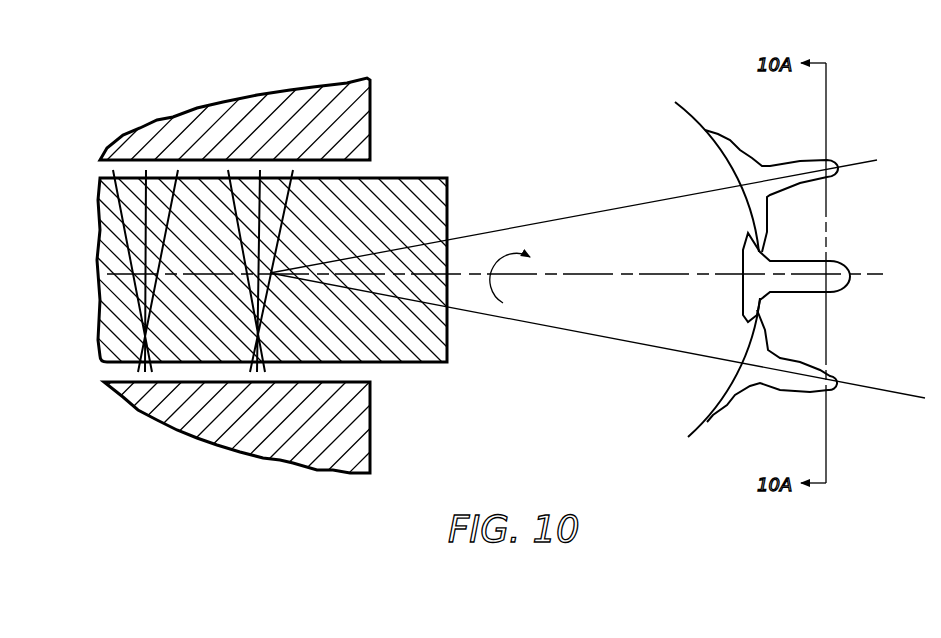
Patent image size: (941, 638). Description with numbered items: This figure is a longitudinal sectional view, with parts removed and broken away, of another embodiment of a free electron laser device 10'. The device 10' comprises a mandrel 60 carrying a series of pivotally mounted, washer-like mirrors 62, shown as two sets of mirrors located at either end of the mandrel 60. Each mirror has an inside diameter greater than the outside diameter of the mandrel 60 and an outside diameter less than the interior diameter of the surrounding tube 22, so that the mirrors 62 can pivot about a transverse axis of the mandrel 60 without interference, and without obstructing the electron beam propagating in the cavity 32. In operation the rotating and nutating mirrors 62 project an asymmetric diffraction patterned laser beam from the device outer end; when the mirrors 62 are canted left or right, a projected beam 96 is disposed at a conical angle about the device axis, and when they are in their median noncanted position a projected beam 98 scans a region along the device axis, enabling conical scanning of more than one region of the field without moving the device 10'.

The free electron laser device 10' is at (516, 199).
The tube 22 is at (352, 130).
The mandrel 60 is at (448, 210).
The cavity 32 is at (371, 372).
The mirrors 62 is at (237, 224).
The projected beam 96 is at (838, 163).
The projected beam 98 is at (849, 276).